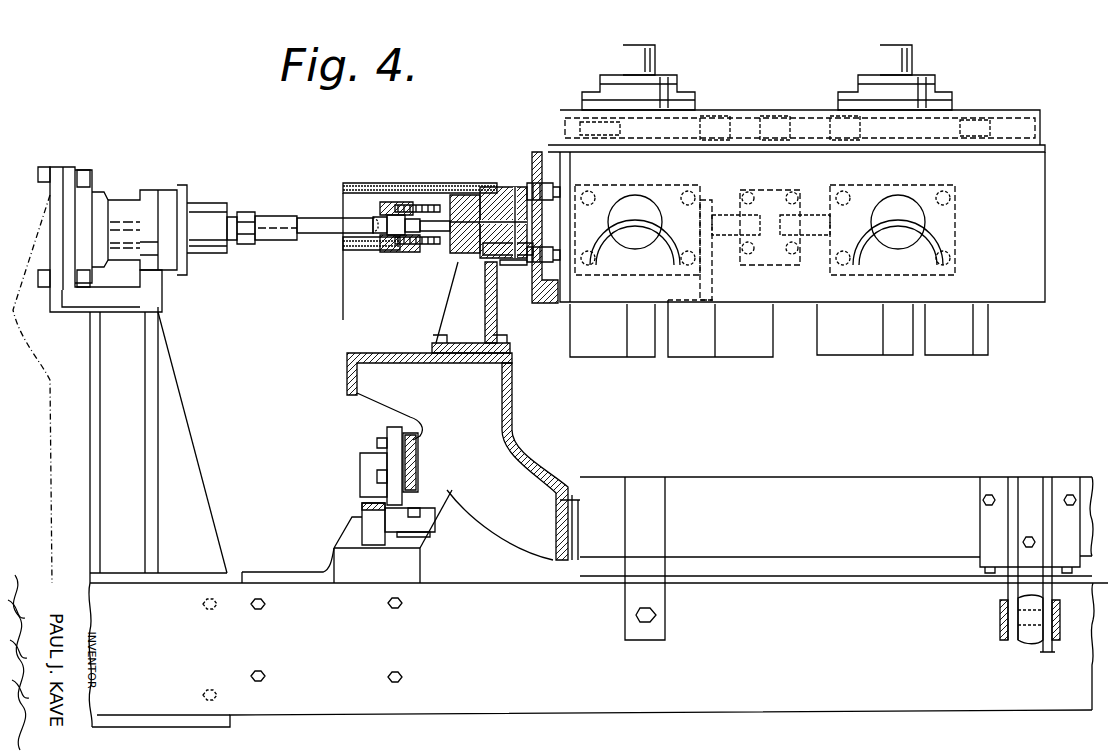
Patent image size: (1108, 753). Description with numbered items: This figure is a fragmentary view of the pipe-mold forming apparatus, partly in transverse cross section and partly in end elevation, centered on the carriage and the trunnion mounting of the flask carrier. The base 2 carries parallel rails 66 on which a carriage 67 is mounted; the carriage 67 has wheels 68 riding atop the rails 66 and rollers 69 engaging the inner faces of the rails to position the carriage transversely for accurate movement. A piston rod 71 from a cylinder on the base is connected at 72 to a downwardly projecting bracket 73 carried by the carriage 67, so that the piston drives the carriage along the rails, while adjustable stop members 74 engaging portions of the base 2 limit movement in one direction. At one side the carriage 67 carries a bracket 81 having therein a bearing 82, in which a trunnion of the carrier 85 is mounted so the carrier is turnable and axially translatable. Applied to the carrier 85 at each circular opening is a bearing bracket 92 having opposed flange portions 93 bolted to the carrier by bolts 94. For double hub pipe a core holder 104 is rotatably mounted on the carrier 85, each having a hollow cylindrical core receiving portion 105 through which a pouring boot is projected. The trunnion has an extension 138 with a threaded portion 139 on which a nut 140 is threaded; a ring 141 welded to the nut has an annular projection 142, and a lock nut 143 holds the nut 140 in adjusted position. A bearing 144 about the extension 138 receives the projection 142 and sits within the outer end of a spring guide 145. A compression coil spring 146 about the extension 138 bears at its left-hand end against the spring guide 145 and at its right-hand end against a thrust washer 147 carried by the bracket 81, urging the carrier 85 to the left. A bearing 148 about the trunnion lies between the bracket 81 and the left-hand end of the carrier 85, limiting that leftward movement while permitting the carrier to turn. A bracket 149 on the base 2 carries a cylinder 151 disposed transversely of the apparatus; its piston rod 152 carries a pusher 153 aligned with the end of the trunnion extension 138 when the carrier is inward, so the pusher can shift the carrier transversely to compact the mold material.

The base 2 is at (846, 643).
The rails 66 is at (370, 515).
The carriage 67 is at (512, 392).
The wheels 68 is at (360, 462).
The rollers 69 is at (432, 538).
The piston rod 71 is at (1030, 598).
The connection 72 is at (1008, 630).
The bracket 73 is at (1010, 598).
The stop members 74 is at (650, 615).
The bracket 81 is at (484, 306).
The bearing 82 is at (478, 258).
The carrier 85 is at (985, 145).
The bearing bracket 92 is at (628, 262).
The flange portions 93 is at (708, 245).
The bolts 94 is at (706, 262).
The core holder 104 is at (678, 92).
The core receiving portion 105 is at (655, 55).
The trunnion extension 138 is at (458, 192).
The threaded portion 139 is at (330, 218).
The nut 140 is at (395, 235).
The ring 141 is at (410, 232).
The annular projection 142 is at (425, 238).
The lock nut 143 is at (378, 233).
The bearing 144 is at (388, 202).
The spring guide 145 is at (425, 205).
The compression coil spring 146 is at (417, 244).
The thrust washer 147 is at (432, 260).
The bearing 148 is at (512, 198).
The bracket 149 is at (170, 390).
The cylinder 151 is at (122, 208).
The piston rod 152 is at (240, 212).
The pusher 153 is at (270, 216).